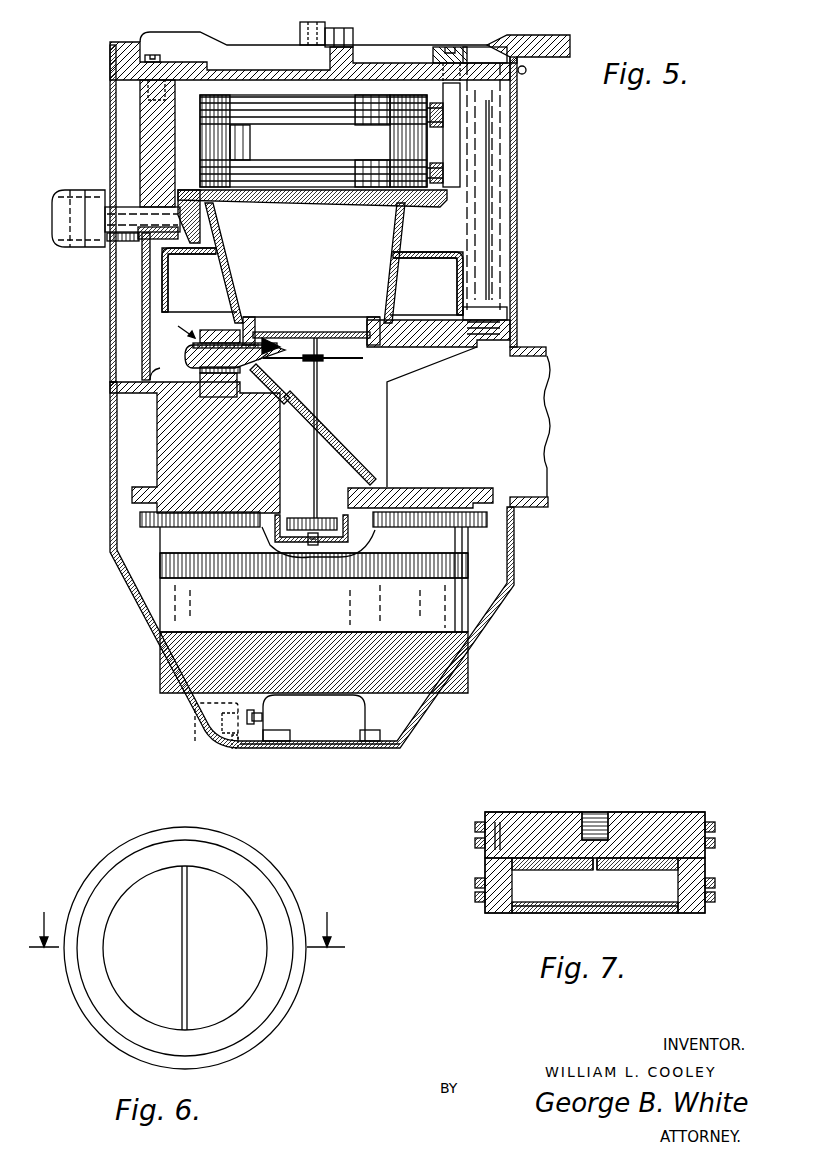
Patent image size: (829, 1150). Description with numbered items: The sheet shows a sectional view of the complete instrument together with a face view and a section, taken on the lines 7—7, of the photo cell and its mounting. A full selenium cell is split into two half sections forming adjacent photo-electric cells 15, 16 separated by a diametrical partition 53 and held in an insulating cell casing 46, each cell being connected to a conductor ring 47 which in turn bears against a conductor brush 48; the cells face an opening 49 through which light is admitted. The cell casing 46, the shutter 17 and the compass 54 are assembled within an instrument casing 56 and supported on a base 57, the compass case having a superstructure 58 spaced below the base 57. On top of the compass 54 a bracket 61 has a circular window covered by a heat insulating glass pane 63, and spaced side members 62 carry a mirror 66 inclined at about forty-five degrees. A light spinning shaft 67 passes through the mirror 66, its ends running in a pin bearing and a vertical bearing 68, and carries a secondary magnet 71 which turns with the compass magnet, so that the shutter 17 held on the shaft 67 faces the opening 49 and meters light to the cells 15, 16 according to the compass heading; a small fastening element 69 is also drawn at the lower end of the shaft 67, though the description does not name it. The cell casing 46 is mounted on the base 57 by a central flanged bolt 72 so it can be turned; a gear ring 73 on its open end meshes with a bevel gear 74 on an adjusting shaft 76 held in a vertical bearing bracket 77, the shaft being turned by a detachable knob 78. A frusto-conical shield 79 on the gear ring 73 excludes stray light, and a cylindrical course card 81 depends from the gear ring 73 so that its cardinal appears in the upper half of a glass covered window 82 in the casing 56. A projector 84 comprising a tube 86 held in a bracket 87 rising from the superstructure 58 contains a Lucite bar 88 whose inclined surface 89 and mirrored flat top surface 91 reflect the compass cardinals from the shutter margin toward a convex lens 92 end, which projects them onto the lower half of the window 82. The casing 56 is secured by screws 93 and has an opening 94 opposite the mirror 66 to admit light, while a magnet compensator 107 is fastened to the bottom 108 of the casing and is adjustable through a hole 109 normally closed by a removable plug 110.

In FIG. 6, the section line 7— 7 is at (187, 918).
In FIG. 6, the photo-electric cell 15 is at (141, 941).
In FIG. 7, the photo-electric cell 15 is at (543, 870).
In FIG. 6, the photo-electric cell 16 is at (229, 941).
In FIG. 7, the photo-electric cell 16 is at (630, 870).
In FIG. 5, the shutter 17 is at (363, 358).
In FIG. 5, the insulating casing 46 is at (313, 141).
In FIG. 6, the insulating casing 46 is at (255, 874).
In FIG. 7, the insulating casing 46 is at (650, 822).
In FIG. 5, the conductor ring 47 is at (302, 172).
In FIG. 6, the conductor ring 47 is at (287, 1003).
In FIG. 7, the conductor ring 47 is at (716, 843).
In FIG. 5, the conductor brush 48 is at (440, 128).
In FIG. 7, the opening 49 is at (648, 913).
In FIG. 6, the diametrical partition 53 is at (188, 915).
In FIG. 7, the diametrical partition 53 is at (595, 870).
In FIG. 5, the compass 54 is at (478, 562).
In FIG. 5, the instrument casing 56 is at (517, 269).
In FIG. 5, the base 57 is at (425, 70).
In FIG. 5, the superstructure 58 is at (172, 447).
In FIG. 5, the bracket 61 is at (410, 345).
In FIG. 5, the side member 62 is at (383, 398).
In FIG. 5, the glass pane 63 is at (275, 337).
In FIG. 5, the mirror 66 is at (345, 452).
In FIG. 5, the spinning shaft 67 is at (317, 404).
In FIG. 5, the bearing 68 is at (318, 334).
In FIG. 5, the nut 69 is at (303, 547).
In FIG. 5, the secondary magnet 71 is at (295, 517).
In FIG. 5, the central flanged bolt 72 is at (330, 54).
In FIG. 5, the gear ring 73 is at (430, 203).
In FIG. 5, the bevel gear 74 is at (183, 226).
In FIG. 5, the adjusting shaft 76 is at (148, 212).
In FIG. 5, the vertical bearing bracket 77 is at (140, 108).
In FIG. 5, the knob 78 is at (82, 247).
In FIG. 5, the frusto-conical shield 79 is at (240, 272).
In FIG. 5, the course card 81 is at (168, 302).
In FIG. 5, the window 82 is at (142, 276).
In FIG. 5, the projector 84 is at (177, 326).
In FIG. 5, the tube 86 is at (200, 370).
In FIG. 5, the bracket 87 is at (266, 382).
In FIG. 5, the Lucite bar 88 is at (210, 331).
In FIG. 5, the inclined surface 89 is at (258, 360).
In FIG. 5, the flat top surface 91 is at (280, 347).
In FIG. 5, the convex lens 92 is at (193, 360).
In FIG. 5, the screw 93 is at (112, 62).
In FIG. 5, the opening 94 is at (540, 398).
In FIG. 5, the magnet compensator 107 is at (357, 722).
In FIG. 5, the bottom 108 is at (328, 749).
In FIG. 5, the hole 109 is at (236, 749).
In FIG. 5, the removable plug 110 is at (200, 736).